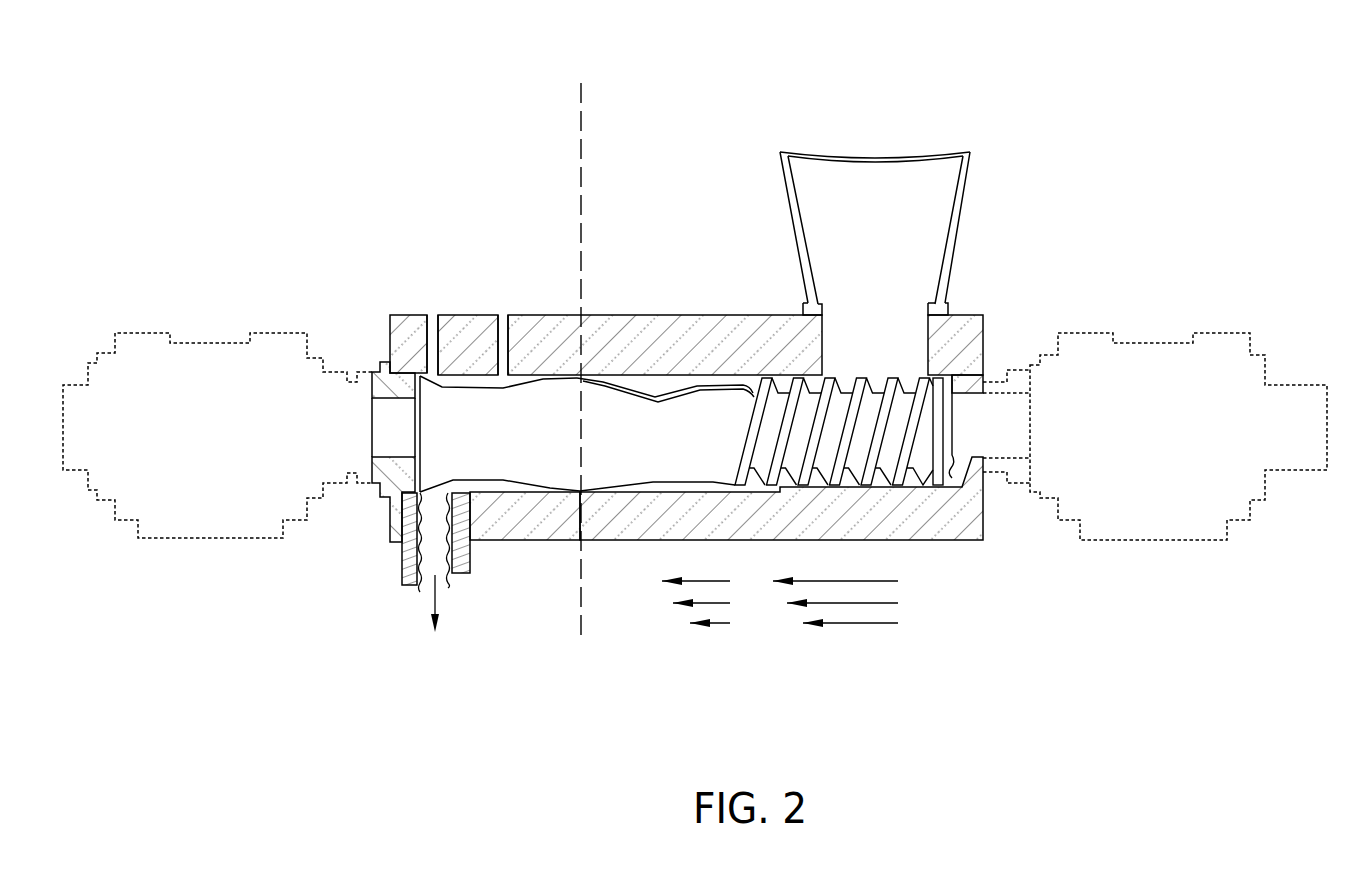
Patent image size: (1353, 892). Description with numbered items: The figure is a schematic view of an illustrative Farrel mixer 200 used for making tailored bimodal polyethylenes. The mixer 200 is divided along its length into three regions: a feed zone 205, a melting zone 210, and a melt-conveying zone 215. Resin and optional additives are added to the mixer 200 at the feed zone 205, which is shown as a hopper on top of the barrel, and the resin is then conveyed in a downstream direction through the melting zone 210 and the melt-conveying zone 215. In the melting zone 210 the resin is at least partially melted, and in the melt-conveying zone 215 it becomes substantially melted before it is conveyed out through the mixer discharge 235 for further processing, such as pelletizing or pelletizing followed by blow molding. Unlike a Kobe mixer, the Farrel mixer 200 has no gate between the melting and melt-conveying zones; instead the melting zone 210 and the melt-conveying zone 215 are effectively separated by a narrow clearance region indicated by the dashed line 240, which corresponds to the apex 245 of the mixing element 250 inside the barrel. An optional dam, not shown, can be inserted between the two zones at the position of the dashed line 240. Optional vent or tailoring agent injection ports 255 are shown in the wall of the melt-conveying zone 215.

The Farrel mixer 200 is at (1117, 225).
The feed zone 205 is at (900, 134).
The melting zone 210 is at (983, 652).
The melt-conveying zone 215 is at (580, 652).
The mixer discharge 235 is at (420, 592).
The dashed line 240 is at (581, 124).
The apex 245 is at (577, 378).
The mixing element 250 is at (712, 412).
The vent or tailoring agent injection ports 255 is at (502, 313).